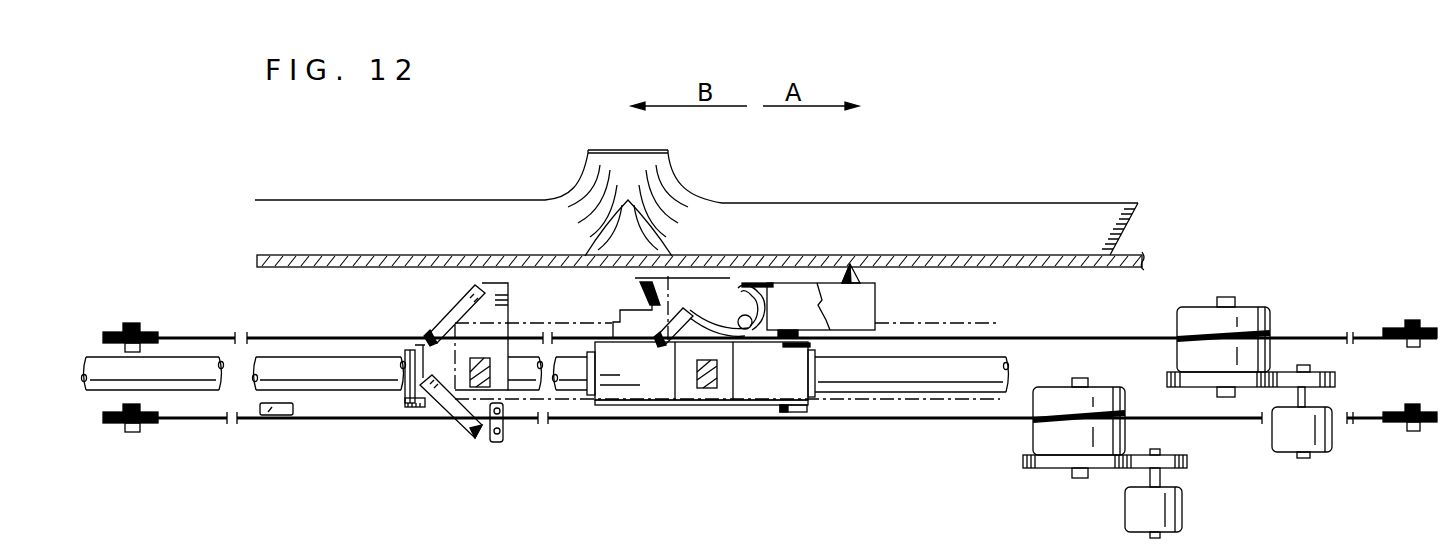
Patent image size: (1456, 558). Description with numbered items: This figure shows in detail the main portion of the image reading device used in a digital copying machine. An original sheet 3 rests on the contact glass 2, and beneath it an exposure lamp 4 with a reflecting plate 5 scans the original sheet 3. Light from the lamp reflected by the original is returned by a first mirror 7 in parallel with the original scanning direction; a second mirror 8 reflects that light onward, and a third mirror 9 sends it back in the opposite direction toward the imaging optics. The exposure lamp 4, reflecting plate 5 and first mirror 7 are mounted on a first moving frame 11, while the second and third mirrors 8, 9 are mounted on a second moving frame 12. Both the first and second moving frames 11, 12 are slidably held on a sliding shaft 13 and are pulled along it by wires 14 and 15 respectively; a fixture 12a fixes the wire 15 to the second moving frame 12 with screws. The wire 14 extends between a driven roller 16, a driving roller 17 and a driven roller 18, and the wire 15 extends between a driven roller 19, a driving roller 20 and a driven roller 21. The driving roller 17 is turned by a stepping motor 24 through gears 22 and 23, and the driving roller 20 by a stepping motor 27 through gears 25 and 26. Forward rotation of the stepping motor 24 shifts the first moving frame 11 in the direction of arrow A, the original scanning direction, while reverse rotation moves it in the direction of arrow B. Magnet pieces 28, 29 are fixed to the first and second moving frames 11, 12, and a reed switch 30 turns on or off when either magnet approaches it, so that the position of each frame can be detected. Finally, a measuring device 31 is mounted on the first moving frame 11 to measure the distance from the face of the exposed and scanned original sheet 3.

The contact glass 2 is at (345, 255).
The original sheet 3 is at (815, 225).
The exposure lamp 4 is at (723, 300).
The reflecting plate 5 is at (737, 345).
The first mirror 7 is at (675, 345).
The second mirror 8 is at (438, 322).
The third mirror 9 is at (470, 430).
The first moving frame 11 is at (630, 392).
The second moving frame 12 is at (497, 283).
The fixture 12a is at (505, 430).
The sliding shaft 13 is at (885, 385).
The wire 14 is at (985, 338).
The wire 15 is at (585, 428).
The driven roller 16 is at (150, 332).
The driving roller 17 is at (1195, 320).
The driven roller 18 is at (1395, 328).
The driven roller 19 is at (150, 425).
The driving roller 20 is at (1105, 405).
The driven roller 21 is at (1430, 415).
The gear 22 is at (1258, 370).
The gear 23 is at (1325, 372).
The stepping motor 24 is at (1330, 445).
The gear 25 is at (1102, 463).
The gear 26 is at (1175, 460).
The stepping motor 27 is at (1185, 508).
The magnet piece 28 is at (785, 413).
The magnet piece 29 is at (410, 408).
The reed switch 30 is at (280, 416).
The measuring device 31 is at (875, 305).